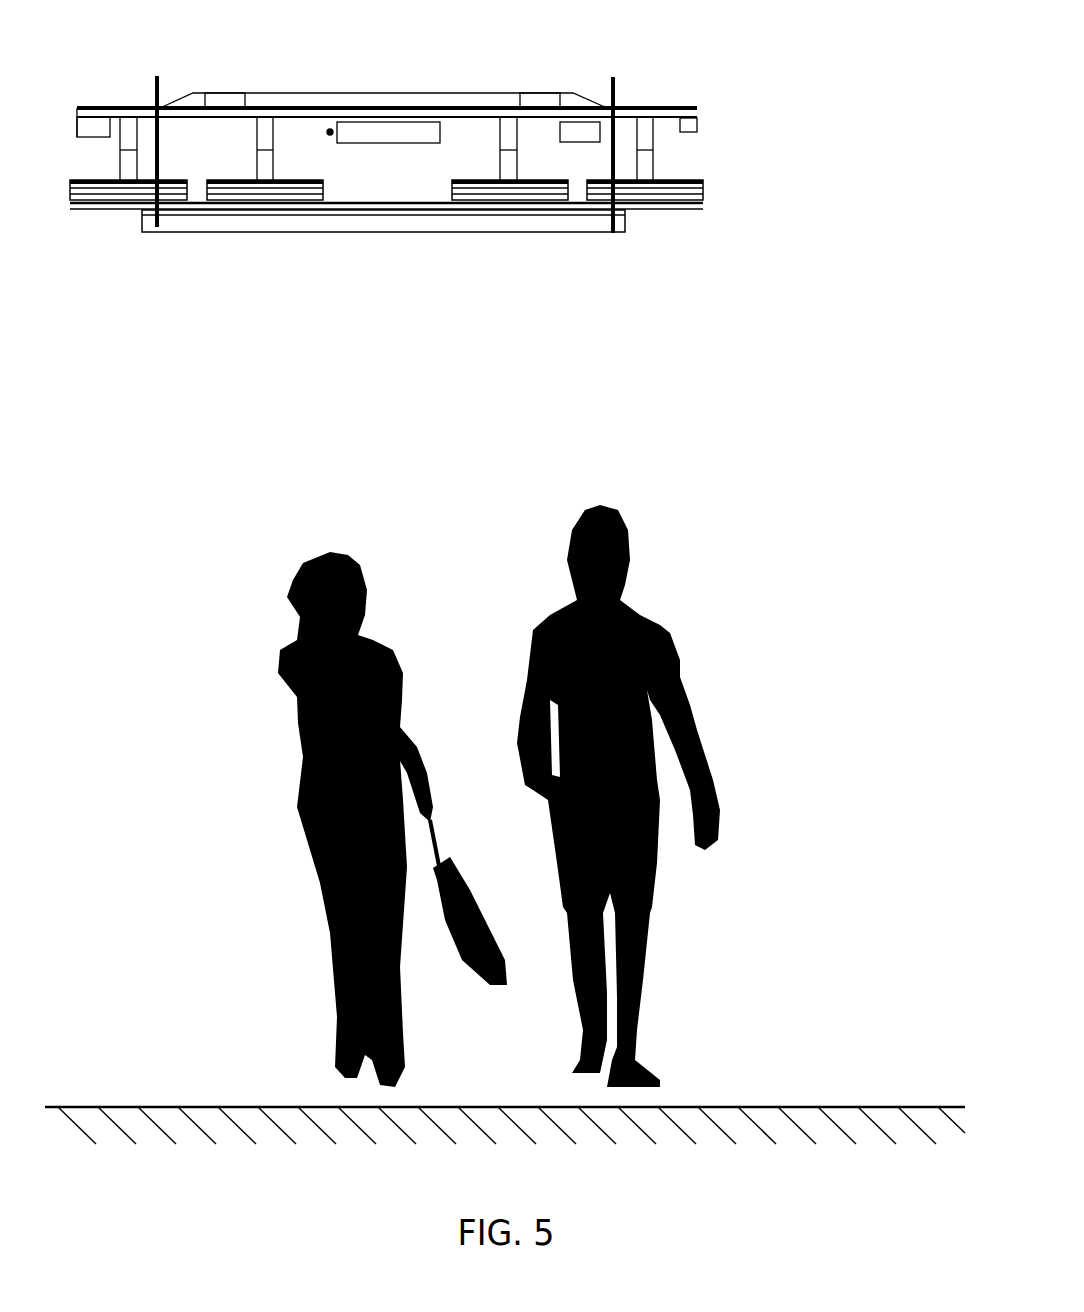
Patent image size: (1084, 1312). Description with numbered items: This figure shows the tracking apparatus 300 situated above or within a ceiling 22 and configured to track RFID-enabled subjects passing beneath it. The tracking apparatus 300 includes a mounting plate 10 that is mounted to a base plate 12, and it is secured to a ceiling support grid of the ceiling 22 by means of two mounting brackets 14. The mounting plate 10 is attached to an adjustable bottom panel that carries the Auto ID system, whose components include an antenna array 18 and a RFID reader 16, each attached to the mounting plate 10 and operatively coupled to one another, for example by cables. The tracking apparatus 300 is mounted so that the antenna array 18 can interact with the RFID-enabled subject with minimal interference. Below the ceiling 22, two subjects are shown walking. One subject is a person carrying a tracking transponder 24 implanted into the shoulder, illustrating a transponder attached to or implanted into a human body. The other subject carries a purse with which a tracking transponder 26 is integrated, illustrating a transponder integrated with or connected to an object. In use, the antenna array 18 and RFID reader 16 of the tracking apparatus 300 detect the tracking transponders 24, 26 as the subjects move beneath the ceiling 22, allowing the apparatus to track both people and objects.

The mounting plate 10 is at (666, 110).
The base plate 12 is at (434, 95).
The mounting bracket 14 is at (162, 82).
The RFID reader 16 is at (360, 128).
The antenna array 18 is at (124, 208).
The ceiling 22 is at (395, 224).
The tracking transponder 24 is at (656, 606).
The tracking transponder 26 is at (469, 983).
The tracking apparatus 300 is at (514, 204).